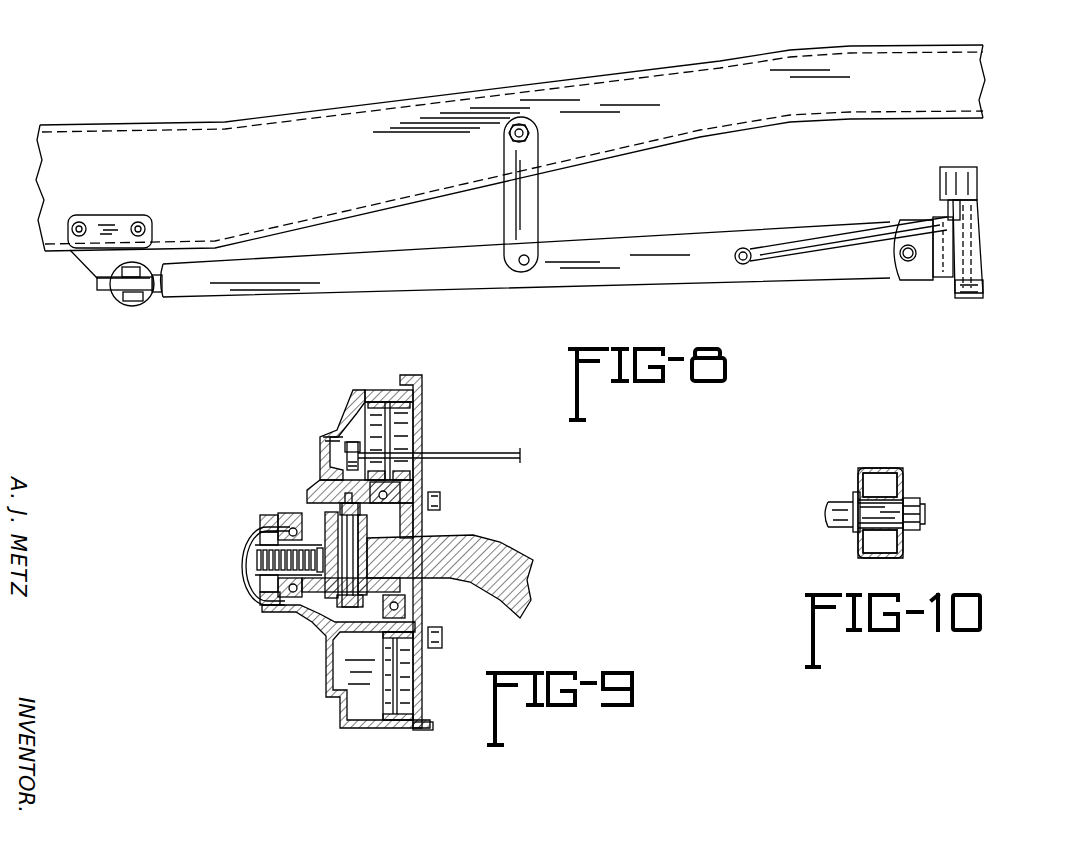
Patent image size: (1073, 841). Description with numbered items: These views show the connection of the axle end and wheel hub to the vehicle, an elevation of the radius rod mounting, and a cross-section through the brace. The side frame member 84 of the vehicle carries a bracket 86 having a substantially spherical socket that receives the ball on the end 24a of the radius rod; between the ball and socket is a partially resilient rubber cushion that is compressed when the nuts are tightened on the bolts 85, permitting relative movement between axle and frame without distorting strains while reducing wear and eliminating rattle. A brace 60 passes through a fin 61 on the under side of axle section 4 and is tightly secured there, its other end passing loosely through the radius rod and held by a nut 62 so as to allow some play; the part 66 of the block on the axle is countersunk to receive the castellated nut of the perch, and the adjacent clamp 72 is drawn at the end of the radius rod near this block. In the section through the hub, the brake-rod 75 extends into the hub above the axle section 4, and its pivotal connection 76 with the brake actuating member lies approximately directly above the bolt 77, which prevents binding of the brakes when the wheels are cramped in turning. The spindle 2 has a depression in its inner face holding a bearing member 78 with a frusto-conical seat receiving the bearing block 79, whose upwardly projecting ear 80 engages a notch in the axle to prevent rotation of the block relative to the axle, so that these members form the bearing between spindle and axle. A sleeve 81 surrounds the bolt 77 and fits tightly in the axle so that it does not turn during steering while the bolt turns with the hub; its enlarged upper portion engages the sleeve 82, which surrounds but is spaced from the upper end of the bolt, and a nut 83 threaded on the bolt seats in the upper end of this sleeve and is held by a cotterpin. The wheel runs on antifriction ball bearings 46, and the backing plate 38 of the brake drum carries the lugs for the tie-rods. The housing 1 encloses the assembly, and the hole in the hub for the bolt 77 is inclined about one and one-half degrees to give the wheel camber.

In FIG. 9, the brake housing 1 is at (350, 690).
In FIG. 9, the spindle 2 is at (262, 590).
In FIG. 8, the stub axle section 4 is at (967, 300).
In FIG. 9, the stub axle section 4 is at (493, 547).
In FIG. 8, the end of the radius rod 24a is at (469, 275).
In FIG. 9, the backing plate 38 is at (422, 412).
In FIG. 9, the antifriction bearings 46 is at (400, 617).
In FIG. 8, the brace 60 is at (850, 240).
In FIG. 10, the brace 60 is at (843, 503).
In FIG. 8, the fin 61 is at (950, 212).
In FIG. 10, the nut 62 is at (915, 500).
In FIG. 8, the part of the block 66 is at (983, 267).
In FIG. 8, the clamp 72 is at (905, 258).
In FIG. 9, the brake-rod 75 is at (490, 450).
In FIG. 9, the pivotal connection 76 is at (352, 442).
In FIG. 9, the bolt 77 is at (350, 610).
In FIG. 9, the bearing member 78 is at (340, 600).
In FIG. 9, the bearing block 79 is at (373, 582).
In FIG. 9, the ear 80 is at (310, 613).
In FIG. 9, the sleeve 81 is at (430, 533).
In FIG. 9, the sleeve 82 is at (442, 507).
In FIG. 9, the nut 83 is at (335, 507).
In FIG. 8, the side frame member 84 is at (510, 156).
In FIG. 10, the side frame member 84 is at (883, 480).
In FIG. 8, the bolts 85 is at (136, 298).
In FIG. 8, the bracket 86 is at (118, 223).